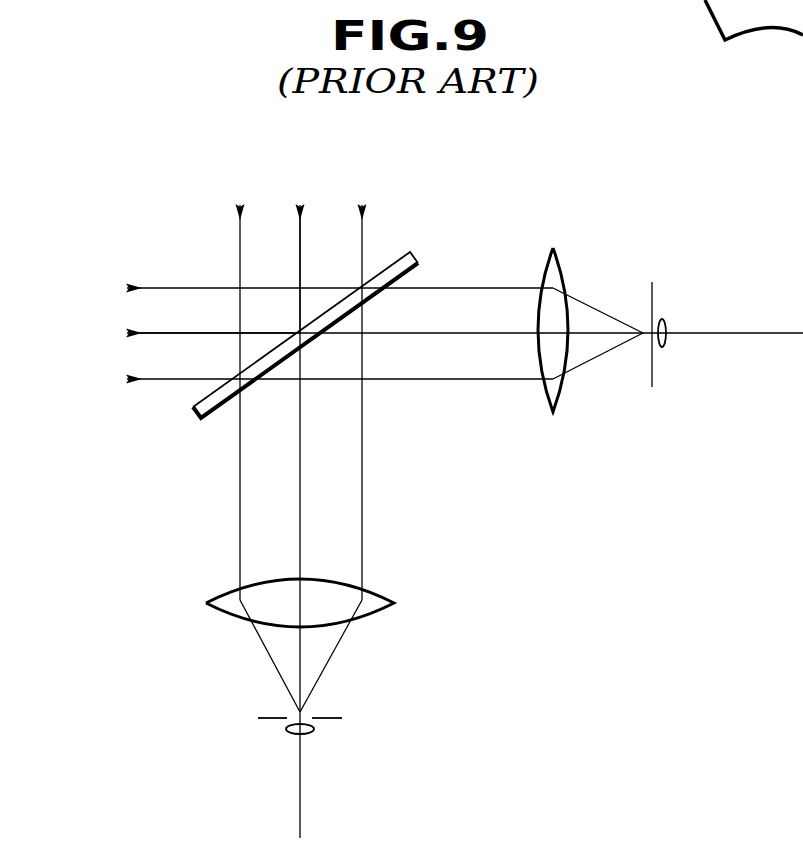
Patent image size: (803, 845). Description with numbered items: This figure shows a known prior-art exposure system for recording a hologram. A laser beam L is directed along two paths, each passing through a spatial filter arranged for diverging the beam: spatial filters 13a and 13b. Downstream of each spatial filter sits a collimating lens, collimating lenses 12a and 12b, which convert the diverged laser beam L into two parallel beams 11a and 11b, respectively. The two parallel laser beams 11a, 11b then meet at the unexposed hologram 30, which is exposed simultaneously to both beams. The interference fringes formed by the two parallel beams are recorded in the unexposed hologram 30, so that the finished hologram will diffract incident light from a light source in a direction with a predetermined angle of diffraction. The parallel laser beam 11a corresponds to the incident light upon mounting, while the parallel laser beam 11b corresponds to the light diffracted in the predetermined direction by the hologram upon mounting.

The parallel laser beam 11a is at (372, 190).
The parallel laser beam 11b is at (118, 280).
The unexposed hologram 30 is at (405, 252).
The collimating lens 12a is at (378, 602).
The collimating lens 12b is at (552, 398).
The spatial filter 13a is at (354, 700).
The spatial filter 13b is at (633, 395).
The laser beam L is at (302, 787).